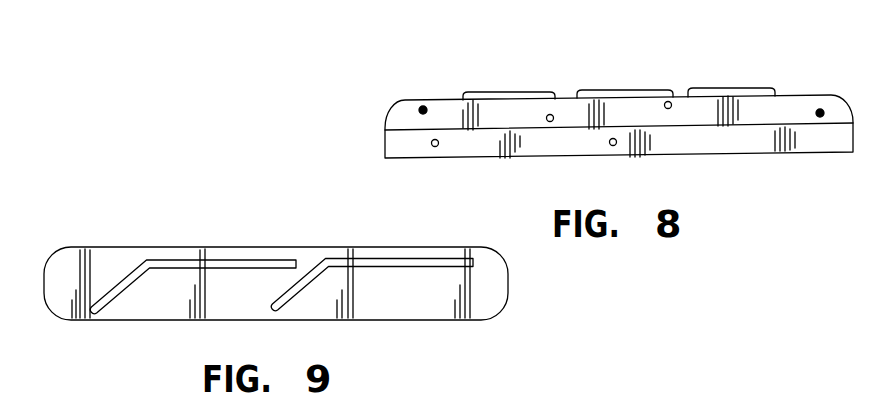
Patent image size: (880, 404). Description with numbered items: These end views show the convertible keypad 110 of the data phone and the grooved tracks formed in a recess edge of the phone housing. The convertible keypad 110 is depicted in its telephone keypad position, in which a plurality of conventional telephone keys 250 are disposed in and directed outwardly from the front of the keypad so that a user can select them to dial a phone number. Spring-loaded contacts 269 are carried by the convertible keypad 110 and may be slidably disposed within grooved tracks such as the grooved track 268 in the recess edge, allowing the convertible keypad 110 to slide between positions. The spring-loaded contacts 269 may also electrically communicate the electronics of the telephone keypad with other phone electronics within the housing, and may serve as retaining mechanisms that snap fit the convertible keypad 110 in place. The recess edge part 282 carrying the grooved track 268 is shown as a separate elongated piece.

In FIG. 8, the convertible keypad 110 is at (513, 112).
In FIG. 8, the telephone keys 250 is at (737, 88).
In FIG. 8, the spring-loaded contacts 269 is at (423, 110).
In FIG. 9, the grooved track 268 is at (148, 258).
In FIG. 9, the retaining plate 282 is at (398, 288).